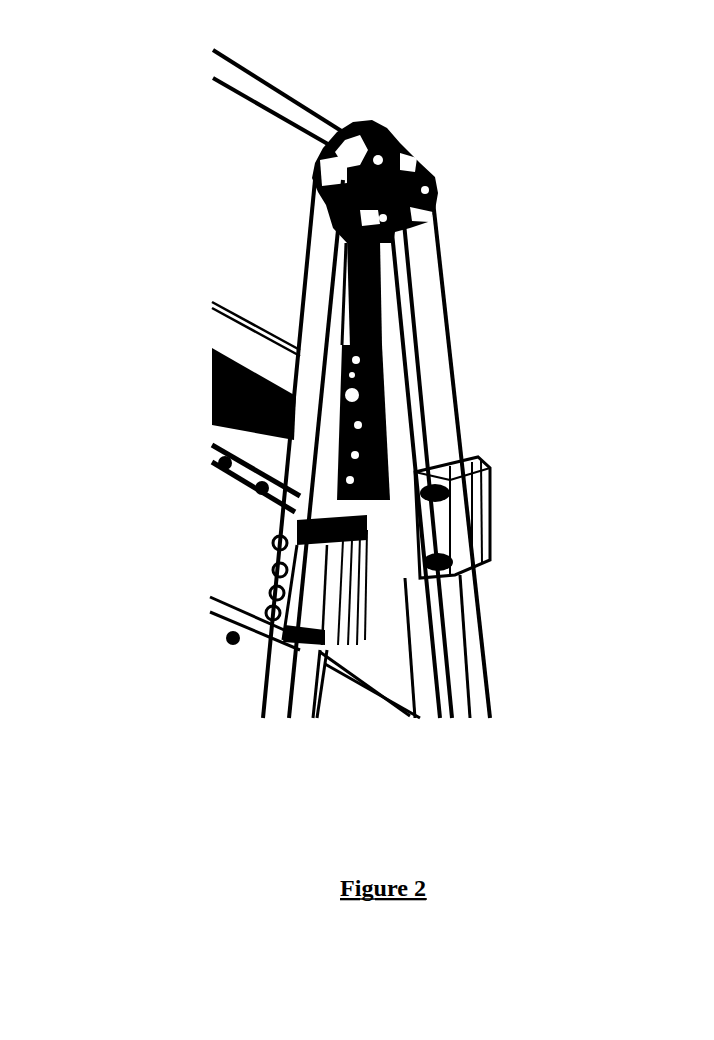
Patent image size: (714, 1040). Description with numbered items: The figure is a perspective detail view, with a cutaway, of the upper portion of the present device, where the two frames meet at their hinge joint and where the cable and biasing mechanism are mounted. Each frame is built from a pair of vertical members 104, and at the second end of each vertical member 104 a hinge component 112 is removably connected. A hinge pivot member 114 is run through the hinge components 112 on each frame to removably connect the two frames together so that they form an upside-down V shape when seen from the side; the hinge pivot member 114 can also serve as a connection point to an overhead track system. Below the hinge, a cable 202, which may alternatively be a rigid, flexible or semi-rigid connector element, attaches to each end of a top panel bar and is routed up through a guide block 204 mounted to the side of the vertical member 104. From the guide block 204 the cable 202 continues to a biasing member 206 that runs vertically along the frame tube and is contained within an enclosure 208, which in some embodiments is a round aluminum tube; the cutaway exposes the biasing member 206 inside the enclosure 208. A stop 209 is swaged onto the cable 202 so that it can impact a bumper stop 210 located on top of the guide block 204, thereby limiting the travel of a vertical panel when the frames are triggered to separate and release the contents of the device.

The hinge pivot member 114 is at (257, 83).
The hinge component 112 is at (390, 142).
The biasing member 206 is at (343, 290).
The enclosure 208 is at (463, 363).
The stop 209 is at (370, 397).
The guide block 204 is at (495, 510).
The cable 202 is at (353, 468).
The bumper stop 210 is at (312, 520).
The vertical member 104 is at (302, 475).